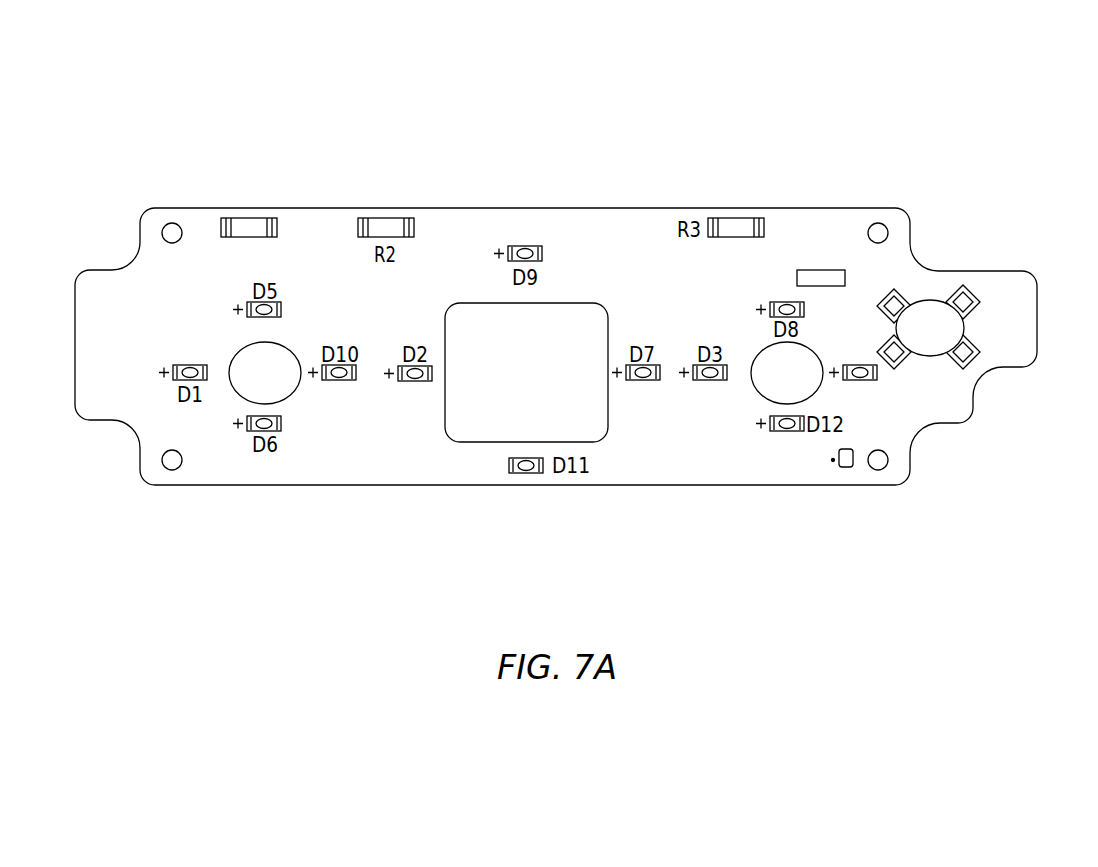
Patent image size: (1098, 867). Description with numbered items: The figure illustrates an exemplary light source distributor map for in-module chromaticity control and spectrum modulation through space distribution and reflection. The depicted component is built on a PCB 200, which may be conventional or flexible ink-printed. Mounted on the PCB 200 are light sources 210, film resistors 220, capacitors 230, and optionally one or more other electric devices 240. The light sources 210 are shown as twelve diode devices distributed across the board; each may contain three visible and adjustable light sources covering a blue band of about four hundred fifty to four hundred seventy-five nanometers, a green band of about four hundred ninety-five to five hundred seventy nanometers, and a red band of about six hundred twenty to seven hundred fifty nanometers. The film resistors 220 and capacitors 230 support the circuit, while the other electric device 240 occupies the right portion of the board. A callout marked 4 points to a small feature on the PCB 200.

The PCB 200 is at (472, 490).
The light sources 210 is at (881, 386).
The film resistors 220 is at (243, 214).
The capacitors 230 is at (848, 476).
The other electric device 240 is at (931, 293).
The connection point detail 4 is at (823, 278).